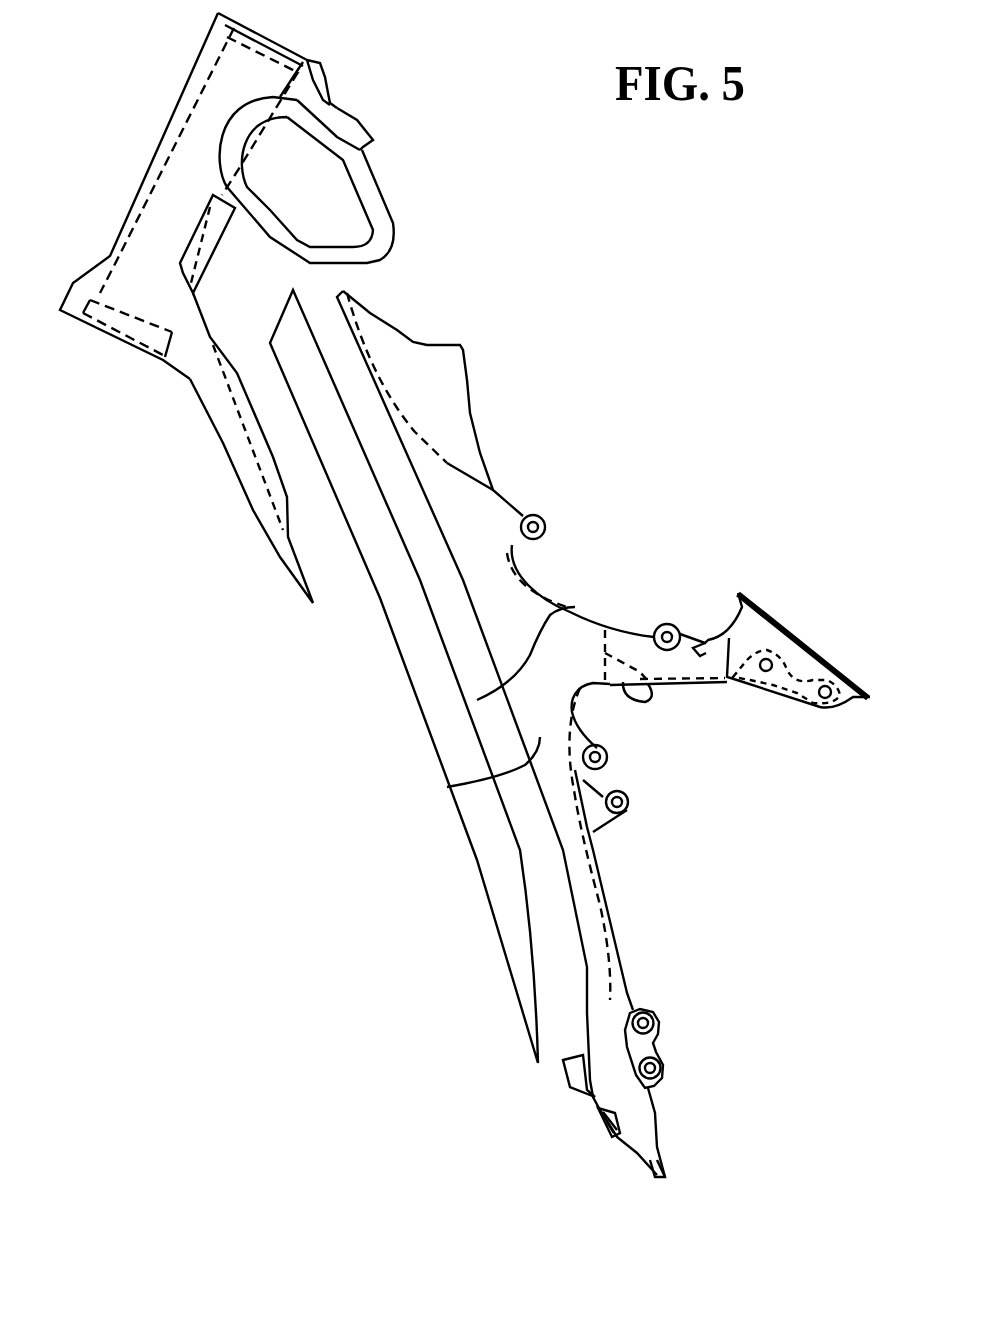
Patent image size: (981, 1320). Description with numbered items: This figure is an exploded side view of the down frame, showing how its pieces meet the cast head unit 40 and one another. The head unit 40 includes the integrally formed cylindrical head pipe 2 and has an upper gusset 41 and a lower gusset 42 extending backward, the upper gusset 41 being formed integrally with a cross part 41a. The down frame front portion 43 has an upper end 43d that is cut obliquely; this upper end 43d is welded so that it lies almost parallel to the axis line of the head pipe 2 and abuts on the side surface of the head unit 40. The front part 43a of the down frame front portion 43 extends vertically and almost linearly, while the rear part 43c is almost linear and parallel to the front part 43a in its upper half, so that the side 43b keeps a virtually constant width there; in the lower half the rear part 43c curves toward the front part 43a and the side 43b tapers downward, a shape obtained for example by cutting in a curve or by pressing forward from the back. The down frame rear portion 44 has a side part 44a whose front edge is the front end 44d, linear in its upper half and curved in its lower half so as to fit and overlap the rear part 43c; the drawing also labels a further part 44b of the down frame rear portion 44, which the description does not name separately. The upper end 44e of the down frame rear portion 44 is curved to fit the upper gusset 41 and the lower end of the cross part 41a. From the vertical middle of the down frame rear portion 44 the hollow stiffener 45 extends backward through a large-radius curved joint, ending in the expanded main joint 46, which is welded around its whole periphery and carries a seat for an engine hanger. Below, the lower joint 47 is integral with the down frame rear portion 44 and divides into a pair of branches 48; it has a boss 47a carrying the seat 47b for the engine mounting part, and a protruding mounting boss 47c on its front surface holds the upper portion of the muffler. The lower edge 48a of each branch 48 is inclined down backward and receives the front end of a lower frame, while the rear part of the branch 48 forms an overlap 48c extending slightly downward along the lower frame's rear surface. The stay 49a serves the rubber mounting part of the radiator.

The head pipe 2 is at (167, 137).
The head unit 40 is at (350, 77).
The upper gusset 41 is at (357, 117).
The cross part 41a is at (368, 202).
The lower gusset 42 is at (225, 447).
The down frame front portion 43 is at (428, 770).
The front part 43a is at (387, 623).
The side 43b is at (432, 665).
The rear part 43c is at (567, 610).
The upper end 43d is at (323, 290).
The down frame rear portion 44 is at (495, 436).
The side part 44a is at (402, 387).
The step portion 44b is at (487, 460).
The front end 44d is at (447, 787).
The upper end 44e is at (425, 343).
The stiffener 45 is at (638, 640).
The main joint 46 is at (773, 630).
The lower joint 47 is at (607, 1023).
The boss 47a is at (660, 1033).
The seat 47b is at (660, 1050).
The mounting boss 47c is at (563, 1073).
The branch 48 is at (637, 1140).
The lower edge 48a is at (640, 1163).
The overlap 48c is at (665, 1177).
The stay 49a is at (547, 522).